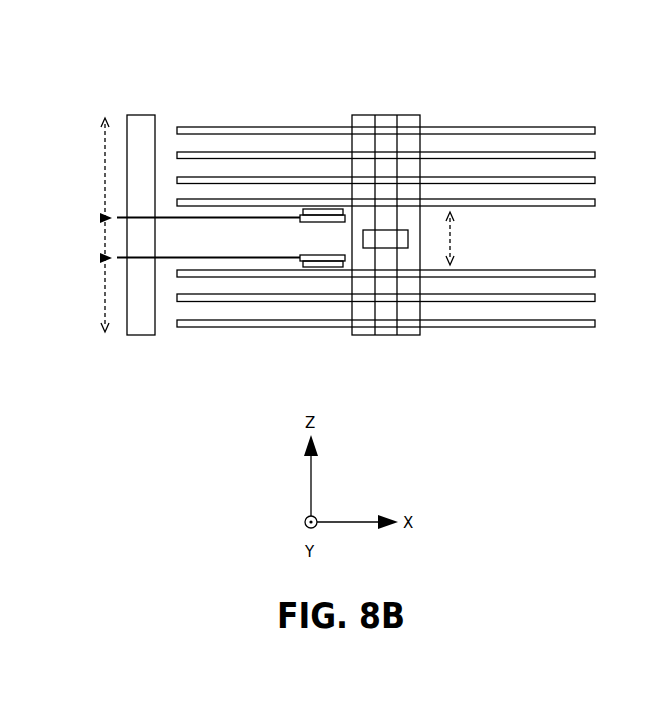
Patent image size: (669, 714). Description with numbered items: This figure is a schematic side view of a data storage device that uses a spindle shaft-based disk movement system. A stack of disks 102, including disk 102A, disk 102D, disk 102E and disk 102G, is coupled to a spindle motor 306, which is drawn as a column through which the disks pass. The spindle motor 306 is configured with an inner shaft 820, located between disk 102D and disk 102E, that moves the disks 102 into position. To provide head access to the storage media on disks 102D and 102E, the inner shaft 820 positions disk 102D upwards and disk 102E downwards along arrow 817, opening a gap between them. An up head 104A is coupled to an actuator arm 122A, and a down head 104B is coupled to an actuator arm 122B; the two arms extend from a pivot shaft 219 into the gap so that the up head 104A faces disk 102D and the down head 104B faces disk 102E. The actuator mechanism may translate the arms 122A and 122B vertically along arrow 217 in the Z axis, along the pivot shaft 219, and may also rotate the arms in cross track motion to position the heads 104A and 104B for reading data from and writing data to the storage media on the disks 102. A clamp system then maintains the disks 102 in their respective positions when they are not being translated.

The disks 102 is at (590, 78).
The pivot shaft 219 is at (145, 114).
The arrow 217 is at (103, 141).
The actuator arm 122A is at (99, 218).
The actuator arm 122B is at (99, 258).
The disk 102A is at (595, 130).
The disk 102D is at (595, 203).
The disk 102E is at (595, 273).
The disk 102G is at (595, 320).
The spindle motor 306 is at (400, 115).
The up head 104A is at (322, 212).
The down head 104B is at (317, 265).
The inner shaft 820 is at (400, 240).
The arrow 817 is at (452, 233).